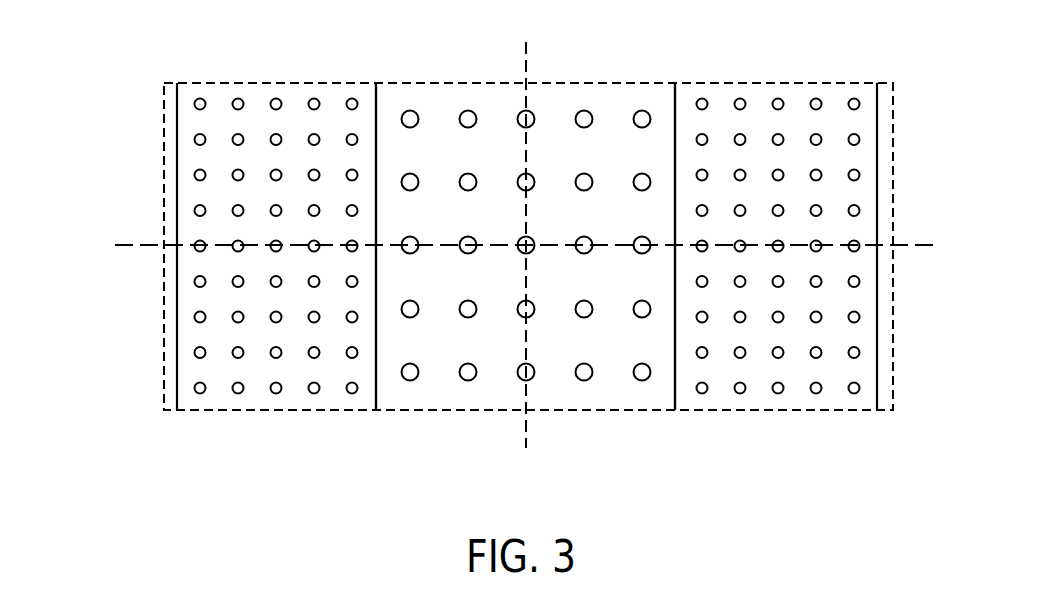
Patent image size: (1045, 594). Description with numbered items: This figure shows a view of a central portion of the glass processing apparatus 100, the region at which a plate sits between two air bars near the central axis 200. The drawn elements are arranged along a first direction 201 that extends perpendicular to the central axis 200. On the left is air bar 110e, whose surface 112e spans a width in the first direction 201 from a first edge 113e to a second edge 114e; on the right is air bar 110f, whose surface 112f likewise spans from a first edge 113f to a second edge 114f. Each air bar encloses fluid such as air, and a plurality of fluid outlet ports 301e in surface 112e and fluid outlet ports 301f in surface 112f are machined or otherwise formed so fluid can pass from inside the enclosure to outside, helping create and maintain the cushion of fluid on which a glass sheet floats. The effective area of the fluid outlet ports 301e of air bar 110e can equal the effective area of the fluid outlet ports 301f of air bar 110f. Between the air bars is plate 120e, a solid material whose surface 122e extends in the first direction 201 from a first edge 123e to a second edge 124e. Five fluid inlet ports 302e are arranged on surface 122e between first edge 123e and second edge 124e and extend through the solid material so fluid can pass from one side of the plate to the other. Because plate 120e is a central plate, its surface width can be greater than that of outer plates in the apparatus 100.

The glass processing apparatus 100 is at (106, 294).
The central axis 200 is at (526, 440).
The first direction 201 is at (908, 249).
The air bar 110e is at (292, 90).
The air bar 110f is at (792, 102).
The surface 112e is at (277, 256).
The surface 112f is at (777, 248).
The first edge 113e is at (177, 143).
The first edge 113f is at (673, 223).
The second edge 114e is at (378, 218).
The second edge 114f is at (878, 203).
The plate 120e is at (563, 107).
The surface 122e is at (524, 253).
The first edge 123e is at (376, 108).
The second edge 124e is at (675, 108).
The fluid outlet ports 301e is at (276, 256).
The fluid outlet ports 301f is at (778, 251).
The fluid inlet ports 302e is at (525, 257).